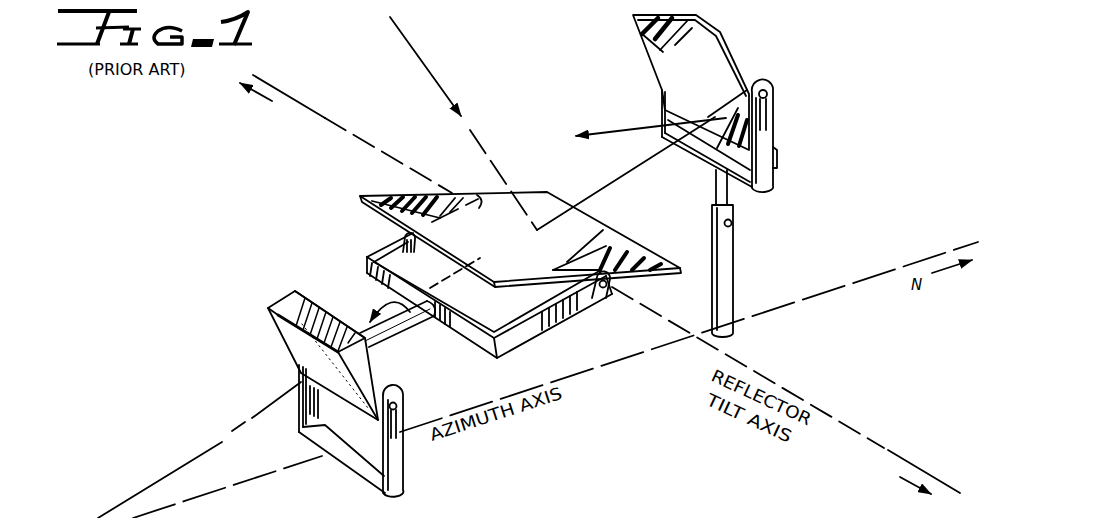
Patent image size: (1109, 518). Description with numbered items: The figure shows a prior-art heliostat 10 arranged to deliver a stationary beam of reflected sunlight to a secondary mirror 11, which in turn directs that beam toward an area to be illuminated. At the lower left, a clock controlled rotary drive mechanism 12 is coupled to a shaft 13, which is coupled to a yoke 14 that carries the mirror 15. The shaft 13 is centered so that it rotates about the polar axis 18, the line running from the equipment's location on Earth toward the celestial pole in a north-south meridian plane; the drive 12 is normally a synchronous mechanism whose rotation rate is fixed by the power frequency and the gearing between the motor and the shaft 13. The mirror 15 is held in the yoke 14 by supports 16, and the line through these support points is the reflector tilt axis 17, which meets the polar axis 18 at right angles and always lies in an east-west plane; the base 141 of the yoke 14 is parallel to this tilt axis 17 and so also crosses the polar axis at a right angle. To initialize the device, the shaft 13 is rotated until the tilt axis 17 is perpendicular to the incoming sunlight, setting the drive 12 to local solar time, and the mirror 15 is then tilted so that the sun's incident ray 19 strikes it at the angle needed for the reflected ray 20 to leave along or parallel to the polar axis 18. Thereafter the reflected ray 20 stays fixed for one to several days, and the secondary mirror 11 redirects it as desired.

The heliostat 10 is at (518, 150).
The secondary mirror 11 is at (595, 52).
The clock controlled rotary drive mechanism 12 is at (286, 300).
The shaft 13 is at (418, 328).
The yoke 14 is at (496, 358).
The base of yoke 141 is at (468, 335).
The mirror 15 is at (547, 200).
The supports 16 is at (398, 240).
The reflector tilt axis 17 is at (362, 142).
The polar axis 18 is at (221, 441).
The incident ray 19 is at (428, 71).
The reflected ray 20 is at (654, 159).